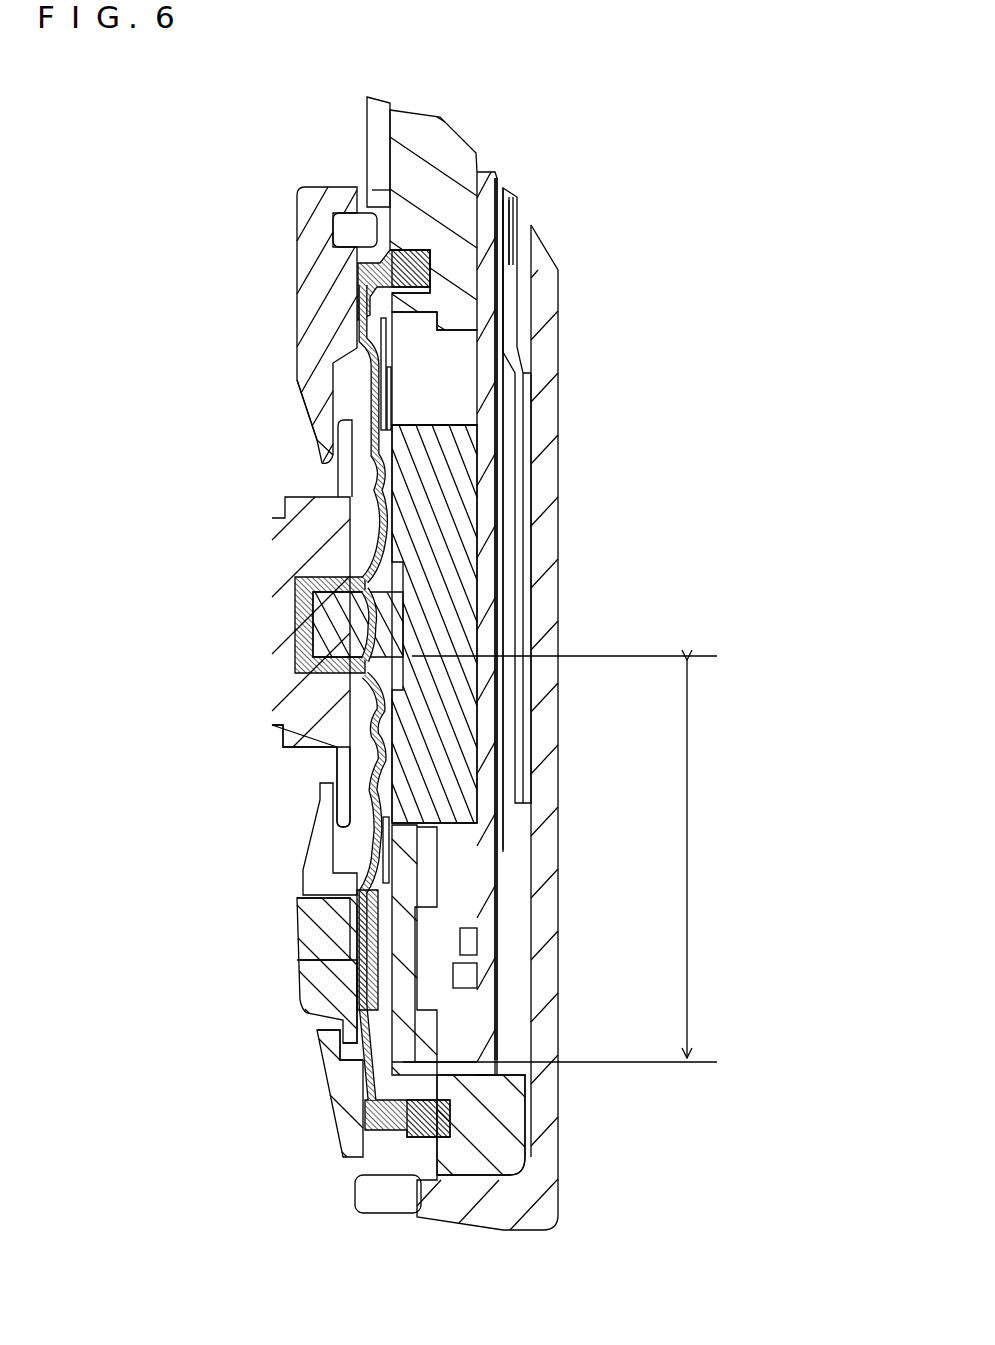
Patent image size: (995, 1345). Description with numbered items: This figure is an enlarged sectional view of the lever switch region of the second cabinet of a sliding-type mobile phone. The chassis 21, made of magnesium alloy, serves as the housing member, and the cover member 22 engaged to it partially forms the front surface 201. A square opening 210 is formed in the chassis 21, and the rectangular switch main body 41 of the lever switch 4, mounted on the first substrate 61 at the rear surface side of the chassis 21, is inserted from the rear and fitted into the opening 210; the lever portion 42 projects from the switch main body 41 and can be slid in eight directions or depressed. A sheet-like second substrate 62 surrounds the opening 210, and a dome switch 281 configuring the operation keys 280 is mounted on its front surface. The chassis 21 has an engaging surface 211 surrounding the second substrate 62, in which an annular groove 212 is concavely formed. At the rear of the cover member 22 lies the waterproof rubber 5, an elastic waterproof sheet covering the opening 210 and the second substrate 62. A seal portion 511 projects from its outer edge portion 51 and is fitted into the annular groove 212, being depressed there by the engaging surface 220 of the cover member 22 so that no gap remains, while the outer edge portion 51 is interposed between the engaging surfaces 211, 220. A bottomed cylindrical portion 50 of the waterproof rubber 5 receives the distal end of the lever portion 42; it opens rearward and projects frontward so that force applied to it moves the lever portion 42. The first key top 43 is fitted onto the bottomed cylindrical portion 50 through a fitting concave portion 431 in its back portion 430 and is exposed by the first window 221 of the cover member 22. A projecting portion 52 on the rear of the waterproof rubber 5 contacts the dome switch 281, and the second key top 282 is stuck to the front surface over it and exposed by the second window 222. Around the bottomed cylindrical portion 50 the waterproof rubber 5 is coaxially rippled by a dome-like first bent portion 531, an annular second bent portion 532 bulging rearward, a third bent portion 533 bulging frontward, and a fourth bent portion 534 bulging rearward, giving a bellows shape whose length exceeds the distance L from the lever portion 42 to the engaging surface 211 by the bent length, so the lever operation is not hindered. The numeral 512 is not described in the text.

The front surface 201 is at (294, 205).
The chassis 21 is at (422, 112).
The annular groove 212 is at (422, 245).
The seal portion 511 is at (400, 250).
The seal lip 512 is at (444, 1141).
The cover member 22 is at (305, 333).
The engaging surface 211 is at (370, 245).
The outer edge portion 51 is at (373, 282).
The engaging surface 220 is at (370, 373).
The first window 221 is at (316, 474).
The opening 210 is at (436, 416).
The first substrate 61 is at (485, 405).
The switch main body 41 is at (455, 535).
The lever portion 42 is at (390, 627).
The lever switch 4 is at (652, 522).
The first key top 43 is at (278, 684).
The fitting concave portion 431 is at (325, 682).
The back portion 430 is at (335, 745).
The bottomed cylindrical portion 50 is at (300, 579).
The waterproof rubber 5 is at (370, 805).
The projecting portion 52 is at (347, 885).
The first bent portion 531 is at (385, 690).
The second bent portion 532 is at (385, 718).
The third bent portion 533 is at (385, 750).
The fourth bent portion 534 is at (385, 780).
The operation keys 280 is at (195, 930).
The second key top 282 is at (307, 937).
The dome switch 281 is at (352, 982).
The second window 222 is at (313, 1029).
The second substrate 62 is at (383, 1047).
The distance L is at (560, 859).